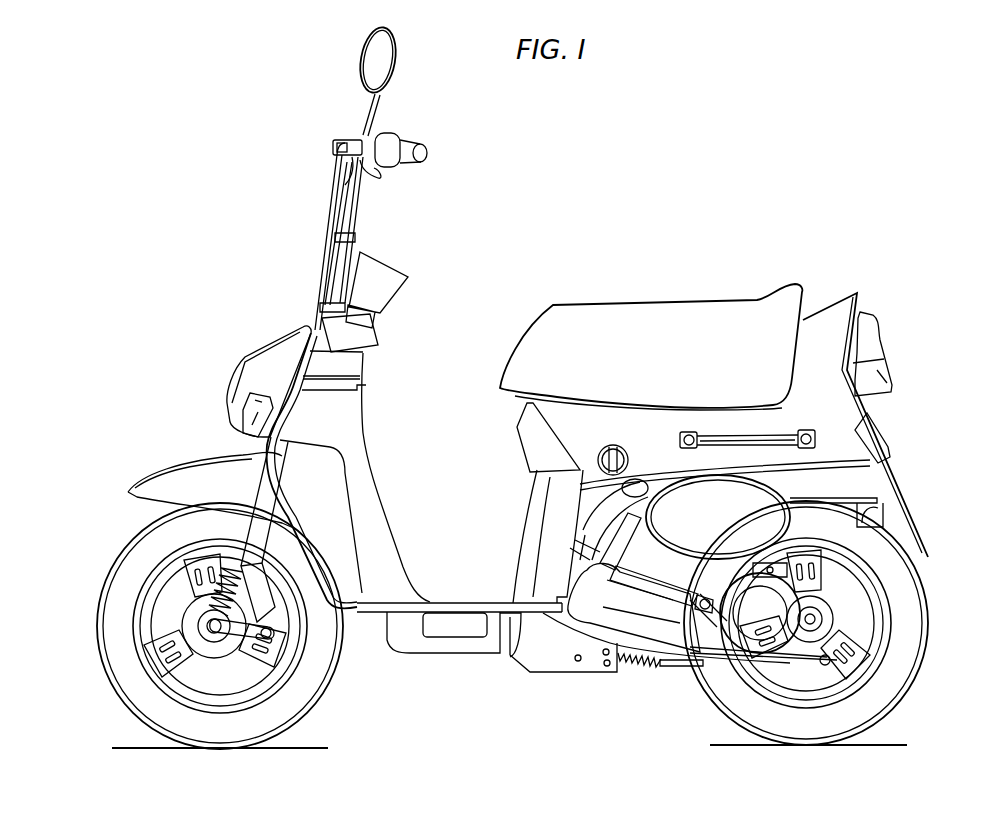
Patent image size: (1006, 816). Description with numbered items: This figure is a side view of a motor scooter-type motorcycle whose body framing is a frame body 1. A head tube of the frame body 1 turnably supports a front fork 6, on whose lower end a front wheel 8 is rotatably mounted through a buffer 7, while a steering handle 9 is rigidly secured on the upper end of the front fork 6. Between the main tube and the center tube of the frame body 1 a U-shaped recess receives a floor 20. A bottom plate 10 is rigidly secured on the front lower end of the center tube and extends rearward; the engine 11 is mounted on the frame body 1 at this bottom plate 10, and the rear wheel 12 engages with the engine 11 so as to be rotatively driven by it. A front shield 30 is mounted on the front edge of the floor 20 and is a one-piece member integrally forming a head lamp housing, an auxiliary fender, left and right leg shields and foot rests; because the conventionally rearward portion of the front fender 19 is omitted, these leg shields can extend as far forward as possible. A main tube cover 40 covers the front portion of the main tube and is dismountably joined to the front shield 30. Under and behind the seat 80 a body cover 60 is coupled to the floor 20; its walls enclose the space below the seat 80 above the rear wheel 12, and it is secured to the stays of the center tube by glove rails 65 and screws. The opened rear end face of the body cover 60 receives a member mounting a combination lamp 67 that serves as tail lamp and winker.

The frame body 1 is at (468, 655).
The front fork 6 is at (188, 437).
The buffer 7 is at (313, 688).
The front wheel 8 is at (97, 594).
The steering handle 9 is at (405, 138).
The bottom plate 10 is at (543, 653).
The engine 11 is at (607, 622).
The rear wheel 12 is at (912, 637).
The front fender 19 is at (131, 437).
The floor 20 is at (452, 600).
The front shield 30 is at (298, 343).
The main tube cover 40 is at (358, 427).
The body cover 60 is at (849, 433).
The glove rail 65 is at (768, 433).
The combination lamp 67 is at (870, 333).
The seat 80 is at (641, 318).